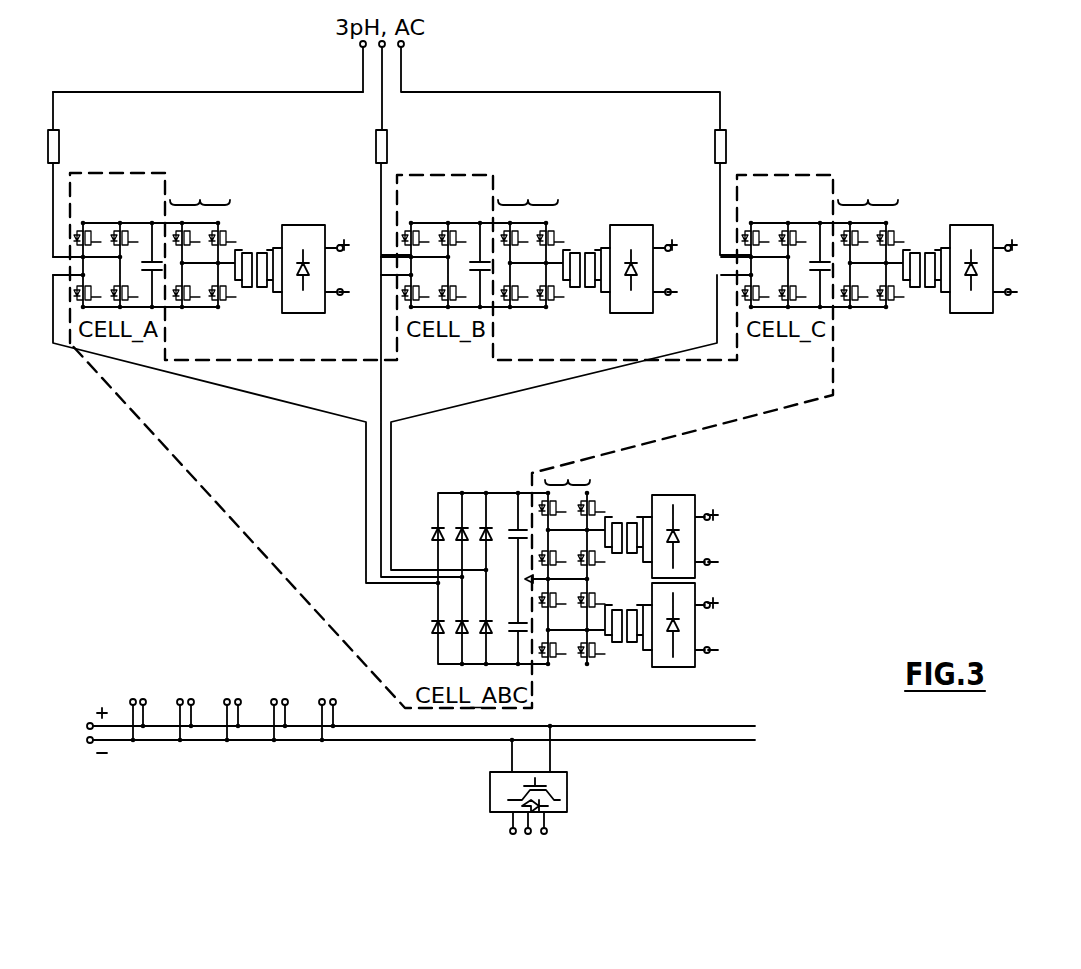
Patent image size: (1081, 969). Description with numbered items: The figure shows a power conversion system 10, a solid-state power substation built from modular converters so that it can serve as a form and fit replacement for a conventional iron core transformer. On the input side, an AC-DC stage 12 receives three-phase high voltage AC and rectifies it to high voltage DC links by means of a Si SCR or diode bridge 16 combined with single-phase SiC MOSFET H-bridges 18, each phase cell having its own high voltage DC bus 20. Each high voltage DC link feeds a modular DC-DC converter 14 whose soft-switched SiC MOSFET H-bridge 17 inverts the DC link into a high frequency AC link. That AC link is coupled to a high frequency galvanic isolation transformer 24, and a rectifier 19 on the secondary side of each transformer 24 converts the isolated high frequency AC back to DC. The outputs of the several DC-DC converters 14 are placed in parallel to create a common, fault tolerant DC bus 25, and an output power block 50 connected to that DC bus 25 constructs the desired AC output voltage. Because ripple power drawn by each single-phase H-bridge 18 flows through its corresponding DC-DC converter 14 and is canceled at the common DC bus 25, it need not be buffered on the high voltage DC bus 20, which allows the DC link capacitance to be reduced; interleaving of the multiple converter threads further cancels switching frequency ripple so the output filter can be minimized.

The power conversion system 10 is at (658, 27).
The AC-DC stage 12 is at (203, 496).
The DC-DC converter 14 is at (275, 208).
The diode bridge 16 is at (445, 602).
The soft-switched SiC MOSFET H-bridge 17 is at (200, 200).
The SiC MOSFET H-bridge 18 is at (100, 230).
The rectifier 19 is at (302, 225).
The high voltage DC bus 20 is at (156, 210).
The high frequency galvanic isolation transformer 24 is at (258, 289).
The DC bus 25 is at (193, 752).
The output power block 50 is at (567, 800).